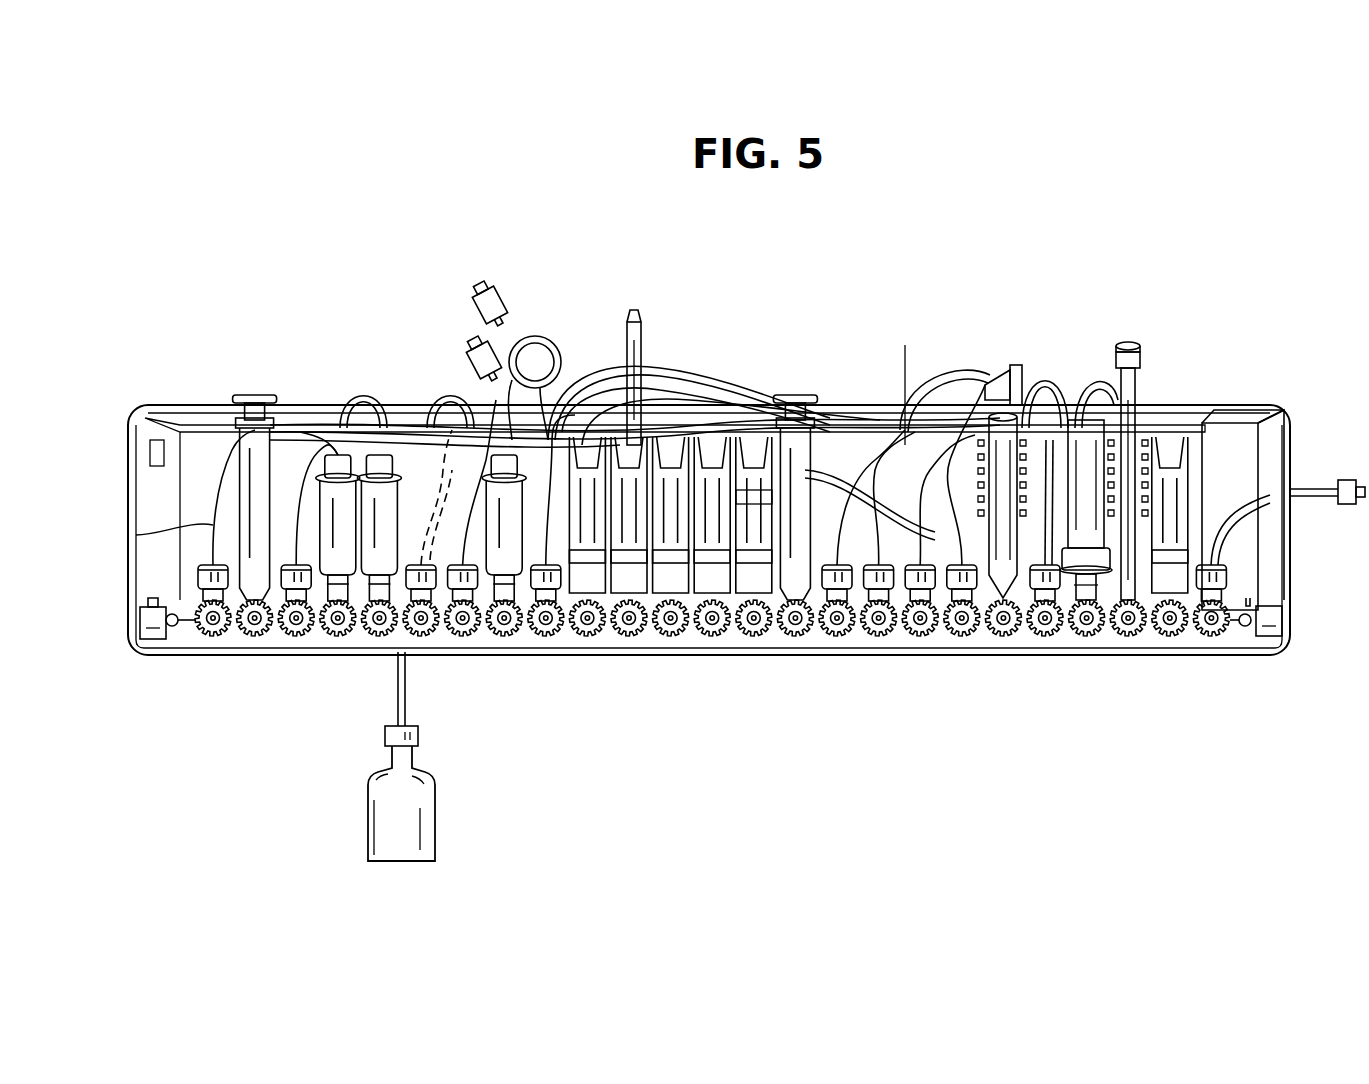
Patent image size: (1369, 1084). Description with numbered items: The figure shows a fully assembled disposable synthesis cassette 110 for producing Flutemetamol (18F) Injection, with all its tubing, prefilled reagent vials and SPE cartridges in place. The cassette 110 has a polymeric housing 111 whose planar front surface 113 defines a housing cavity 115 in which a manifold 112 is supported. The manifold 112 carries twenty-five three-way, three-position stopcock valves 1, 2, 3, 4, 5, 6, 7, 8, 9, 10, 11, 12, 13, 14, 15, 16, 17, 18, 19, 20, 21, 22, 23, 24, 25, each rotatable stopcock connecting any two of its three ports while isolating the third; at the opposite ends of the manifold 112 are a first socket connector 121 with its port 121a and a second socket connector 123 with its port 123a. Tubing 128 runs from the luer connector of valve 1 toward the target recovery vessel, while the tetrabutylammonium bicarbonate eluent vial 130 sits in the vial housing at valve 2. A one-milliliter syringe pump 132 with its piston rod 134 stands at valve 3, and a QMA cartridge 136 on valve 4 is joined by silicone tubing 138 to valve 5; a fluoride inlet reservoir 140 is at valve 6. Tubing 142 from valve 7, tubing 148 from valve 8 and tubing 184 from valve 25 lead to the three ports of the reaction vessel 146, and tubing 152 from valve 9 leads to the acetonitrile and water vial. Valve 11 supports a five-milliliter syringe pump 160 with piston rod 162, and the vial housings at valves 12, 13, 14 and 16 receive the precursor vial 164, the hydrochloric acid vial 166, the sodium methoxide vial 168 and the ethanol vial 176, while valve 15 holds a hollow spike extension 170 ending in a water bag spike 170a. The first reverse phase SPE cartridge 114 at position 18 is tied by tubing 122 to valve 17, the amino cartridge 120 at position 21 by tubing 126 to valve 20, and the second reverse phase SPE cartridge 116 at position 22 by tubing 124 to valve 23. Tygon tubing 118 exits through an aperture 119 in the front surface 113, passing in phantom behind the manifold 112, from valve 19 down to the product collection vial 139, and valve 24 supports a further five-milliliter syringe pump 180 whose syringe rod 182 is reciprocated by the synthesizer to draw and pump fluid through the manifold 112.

The disposable synthesis cassette 110 is at (224, 260).
The polymeric housing 111 is at (128, 455).
The manifold 112 is at (1218, 636).
The planar major front surface 113 is at (222, 457).
The first reverse phase SPE cartridge 114 is at (505, 560).
The housing cavity 115 is at (912, 483).
The second reverse phase SPE cartridge 116 is at (378, 555).
The Tygon tubing 118 is at (408, 712).
The aperture 119 is at (482, 395).
The normal phase SPE cartridge 120 is at (340, 560).
The first socket connector 121 is at (172, 640).
The port 121a is at (150, 605).
The tubing 122 is at (547, 590).
The second socket connector 123 is at (1250, 600).
The port 123a is at (1246, 628).
The tubing 124 is at (296, 440).
The tubing 126 is at (428, 440).
The tubing 128 is at (1306, 494).
The tetrabutylammonium bicarbonate eluent vial 130 is at (1172, 496).
The 1 mL syringe pump 132 is at (1128, 392).
The piston rod 134 is at (1128, 342).
The QMA cartridge 136 is at (1128, 600).
The silicone tubing 138 is at (1086, 600).
The product collection vial 139 is at (436, 828).
The fluoride inlet reservoir 140 is at (1003, 598).
The tubing 142 is at (921, 590).
The reaction vessel 146 is at (1046, 392).
The tubing 148 is at (895, 445).
The tubing 152 is at (532, 360).
The 5 ml syringe pump 160 is at (848, 445).
The piston rod 162 is at (797, 395).
The vial 164 is at (752, 560).
The vial 166 is at (714, 590).
The vial 168 is at (672, 590).
The hollow spike extension 170 is at (687, 440).
The water bag spike 170a is at (632, 308).
The vial 176 is at (592, 430).
The 5 ml syringe pump 180 is at (244, 440).
The syringe rod 182 is at (258, 395).
The tubing 184 is at (136, 535).
The manifold valve 1 is at (1212, 637).
The manifold valve 2 is at (1170, 637).
The manifold valve 3 is at (1129, 637).
The manifold valve 4 is at (1087, 637).
The manifold valve 5 is at (1046, 637).
The manifold valve 6 is at (1004, 637).
The manifold valve 7 is at (963, 637).
The manifold valve 8 is at (921, 637).
The manifold valve 9 is at (880, 637).
The manifold valve 10 is at (838, 637).
The manifold valve 11 is at (796, 637).
The manifold valve 12 is at (754, 637).
The manifold valve 13 is at (713, 637).
The manifold valve 14 is at (671, 637).
The manifold valve 15 is at (630, 637).
The manifold valve 16 is at (589, 637).
The manifold valve 17 is at (547, 637).
The manifold valve 18 is at (505, 637).
The manifold valve 19 is at (464, 637).
The manifold valve 20 is at (422, 637).
The manifold valve 21 is at (381, 637).
The manifold valve 22 is at (340, 637).
The manifold valve 23 is at (298, 637).
The manifold valve 24 is at (256, 637).
The manifold valve 25 is at (214, 637).